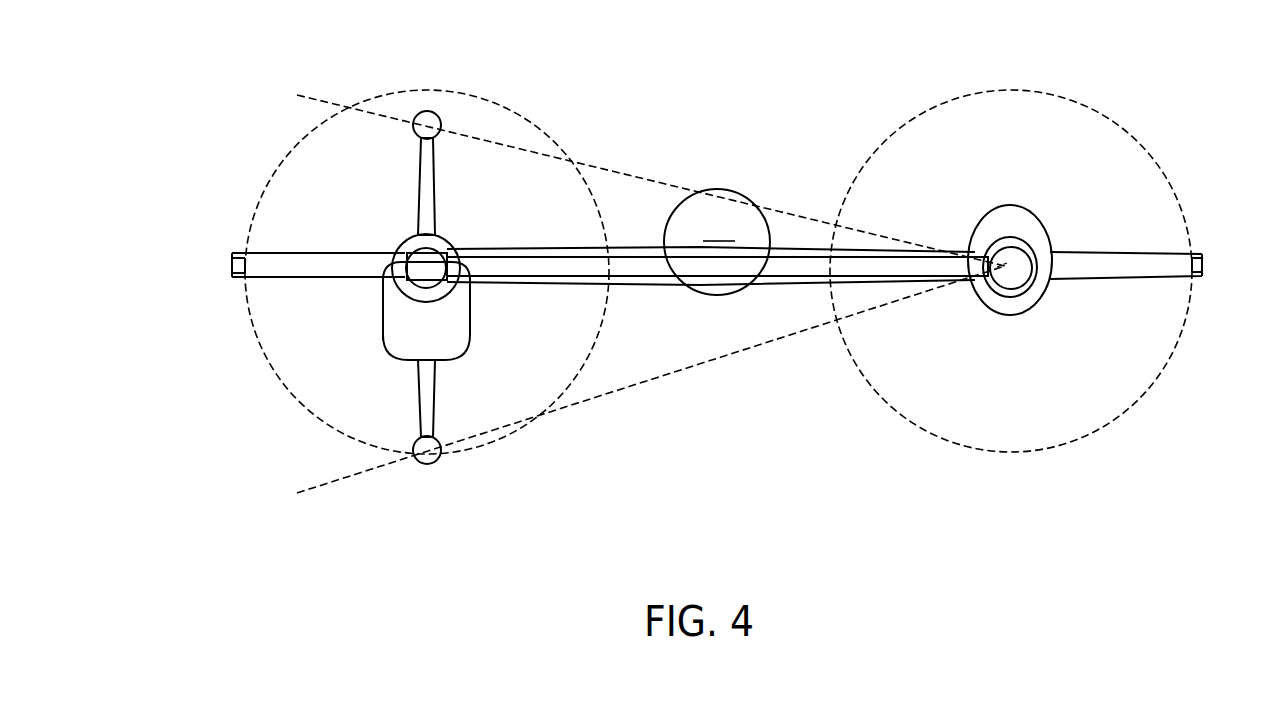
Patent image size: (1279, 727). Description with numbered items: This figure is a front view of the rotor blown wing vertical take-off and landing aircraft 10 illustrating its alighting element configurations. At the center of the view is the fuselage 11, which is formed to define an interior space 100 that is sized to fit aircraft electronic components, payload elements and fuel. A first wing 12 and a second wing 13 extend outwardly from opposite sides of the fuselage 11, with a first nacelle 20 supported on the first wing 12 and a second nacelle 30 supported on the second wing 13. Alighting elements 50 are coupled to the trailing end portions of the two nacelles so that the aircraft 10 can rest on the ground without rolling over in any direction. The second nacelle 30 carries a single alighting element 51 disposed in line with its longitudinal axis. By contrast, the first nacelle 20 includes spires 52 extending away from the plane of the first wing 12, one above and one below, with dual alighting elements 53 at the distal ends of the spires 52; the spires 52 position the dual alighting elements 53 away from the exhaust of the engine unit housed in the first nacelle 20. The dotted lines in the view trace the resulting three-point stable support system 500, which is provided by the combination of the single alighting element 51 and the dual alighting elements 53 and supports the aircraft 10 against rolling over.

The aircraft 10 is at (752, 314).
The fuselage 11 is at (668, 213).
The first wing 12 is at (232, 263).
The second wing 13 is at (1203, 264).
The first nacelle 20 is at (390, 325).
The second nacelle 30 is at (1035, 302).
The alighting elements 50 is at (409, 132).
The single alighting element 51 is at (1005, 252).
The spires 52 is at (437, 187).
The dual alighting elements 53 is at (434, 110).
The interior space 100 is at (719, 228).
The stable support system 500 is at (782, 207).